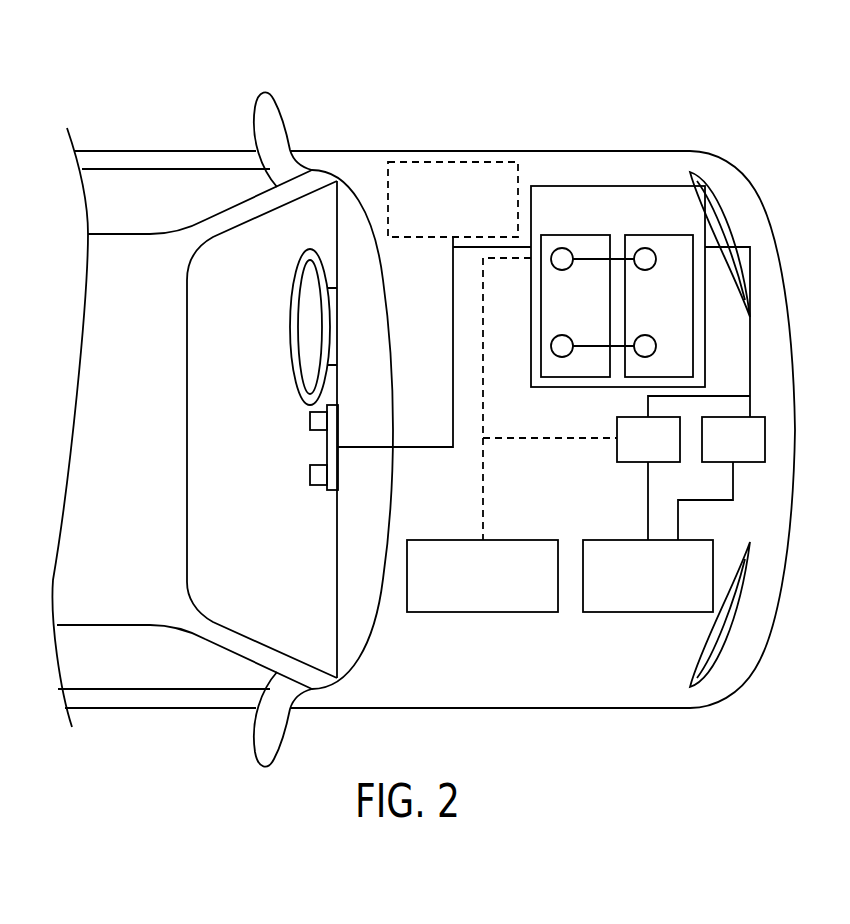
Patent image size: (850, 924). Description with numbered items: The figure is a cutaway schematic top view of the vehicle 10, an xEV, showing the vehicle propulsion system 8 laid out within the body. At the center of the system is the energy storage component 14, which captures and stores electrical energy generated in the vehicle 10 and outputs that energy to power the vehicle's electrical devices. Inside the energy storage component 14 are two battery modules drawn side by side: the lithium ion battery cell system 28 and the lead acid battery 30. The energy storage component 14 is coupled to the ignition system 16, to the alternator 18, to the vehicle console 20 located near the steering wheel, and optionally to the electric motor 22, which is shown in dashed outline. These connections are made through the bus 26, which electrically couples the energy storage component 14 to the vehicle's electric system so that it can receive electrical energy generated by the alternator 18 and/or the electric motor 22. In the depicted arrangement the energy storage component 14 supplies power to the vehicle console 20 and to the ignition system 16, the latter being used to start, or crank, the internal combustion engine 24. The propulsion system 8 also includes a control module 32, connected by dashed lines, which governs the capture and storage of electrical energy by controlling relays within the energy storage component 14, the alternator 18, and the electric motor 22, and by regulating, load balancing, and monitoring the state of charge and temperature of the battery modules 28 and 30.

The vehicle propulsion system 8 is at (708, 110).
The vehicle 10 is at (528, 348).
The energy storage component 14 is at (615, 246).
The ignition system 16 is at (767, 438).
The alternator 18 is at (615, 447).
The vehicle console 20 is at (300, 449).
The electric motor 22 is at (460, 158).
The internal combustion engine 24 is at (640, 613).
The bus 26 is at (453, 288).
The lithium ion battery cell system 28 is at (547, 332).
The lead acid battery 30 is at (683, 330).
The control module 32 is at (478, 613).